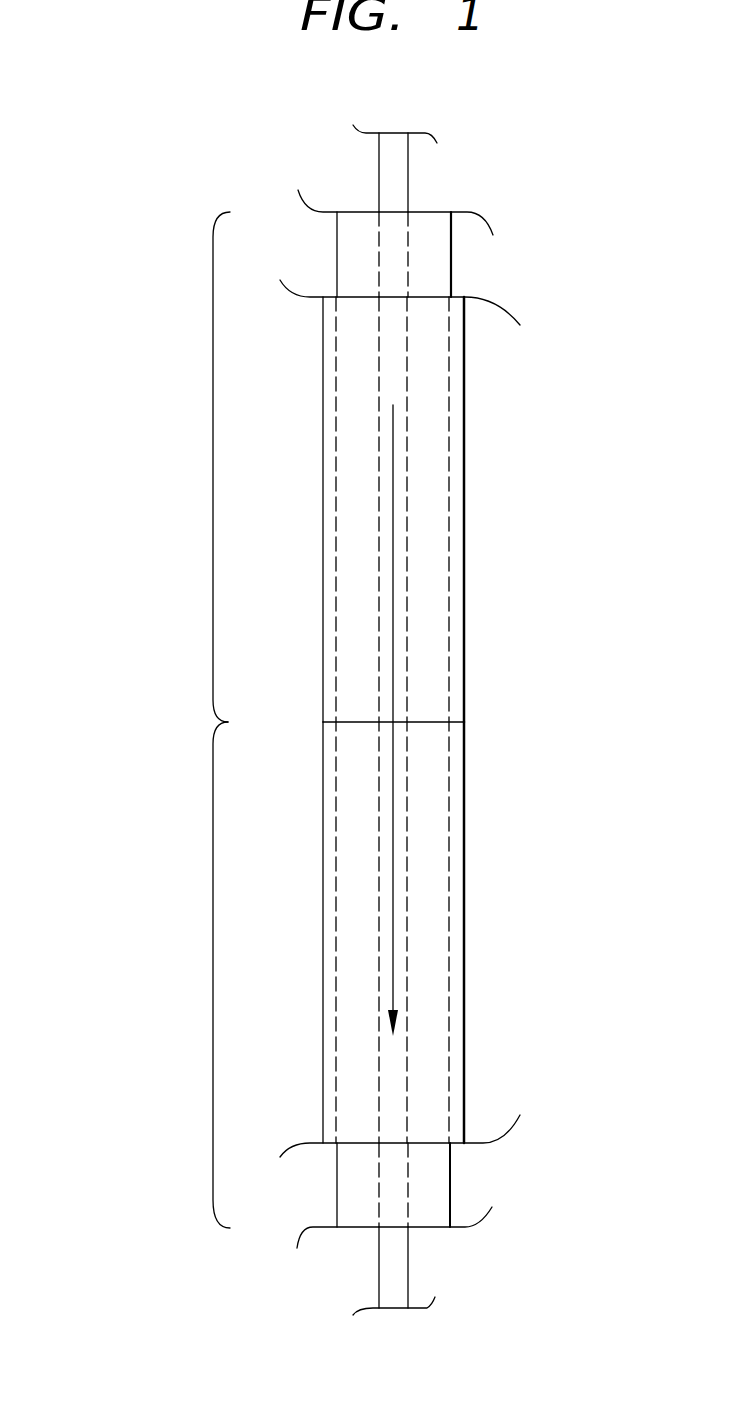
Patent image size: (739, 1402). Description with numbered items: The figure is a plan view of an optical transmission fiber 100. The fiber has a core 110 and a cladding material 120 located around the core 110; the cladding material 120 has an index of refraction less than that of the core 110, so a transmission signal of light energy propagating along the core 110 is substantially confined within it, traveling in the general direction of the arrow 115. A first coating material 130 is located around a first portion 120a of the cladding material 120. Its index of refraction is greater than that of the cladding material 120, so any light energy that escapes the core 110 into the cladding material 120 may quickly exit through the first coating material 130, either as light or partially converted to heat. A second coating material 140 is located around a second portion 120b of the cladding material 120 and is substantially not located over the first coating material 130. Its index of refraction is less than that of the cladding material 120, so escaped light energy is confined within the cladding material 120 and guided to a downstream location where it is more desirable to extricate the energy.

The optical transmission fiber 100 is at (594, 170).
The core 110 is at (408, 1270).
The arrow 115 is at (394, 622).
The cladding material 120 is at (450, 1177).
The first portion of the cladding material 120a is at (207, 467).
The second portion of the cladding material 120b is at (207, 977).
The first coating material 130 is at (465, 512).
The second coating material 140 is at (465, 932).